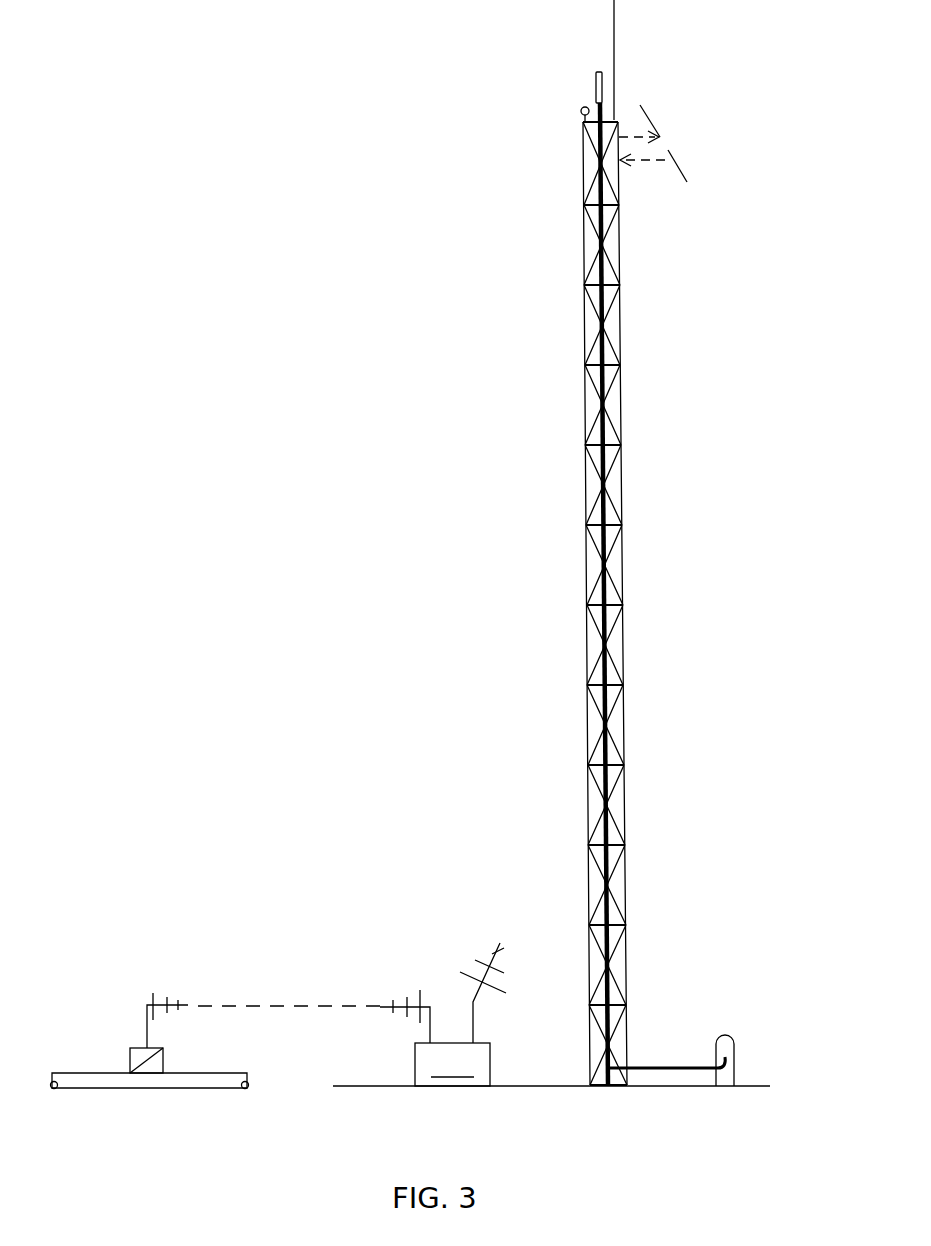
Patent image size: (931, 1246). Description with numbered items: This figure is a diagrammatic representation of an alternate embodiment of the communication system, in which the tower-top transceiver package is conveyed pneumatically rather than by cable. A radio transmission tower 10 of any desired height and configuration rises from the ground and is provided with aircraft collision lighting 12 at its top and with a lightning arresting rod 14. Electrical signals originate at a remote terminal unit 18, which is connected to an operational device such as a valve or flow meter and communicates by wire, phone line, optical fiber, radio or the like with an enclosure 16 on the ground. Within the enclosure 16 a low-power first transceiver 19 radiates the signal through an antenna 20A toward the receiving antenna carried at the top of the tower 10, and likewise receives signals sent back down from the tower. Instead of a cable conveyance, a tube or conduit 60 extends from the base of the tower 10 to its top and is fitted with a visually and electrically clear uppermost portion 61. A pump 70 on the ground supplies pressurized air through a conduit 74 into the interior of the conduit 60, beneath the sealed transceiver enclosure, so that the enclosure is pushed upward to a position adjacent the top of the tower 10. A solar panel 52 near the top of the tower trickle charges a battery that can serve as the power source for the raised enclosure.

The radio transmission tower 10 is at (623, 650).
The aircraft collision lighting 12 is at (581, 106).
The lightning arresting rods 14 is at (615, 32).
The enclosure 16 is at (482, 1097).
The remote terminal unit 18 is at (127, 1065).
The first transceiver 19 is at (458, 1087).
The antenna 20A is at (490, 958).
The solar panel 52 is at (668, 147).
The conduit 60 is at (605, 350).
The uppermost portion 61 is at (593, 88).
The pump 70 is at (735, 1057).
The conduit 74 is at (690, 1070).